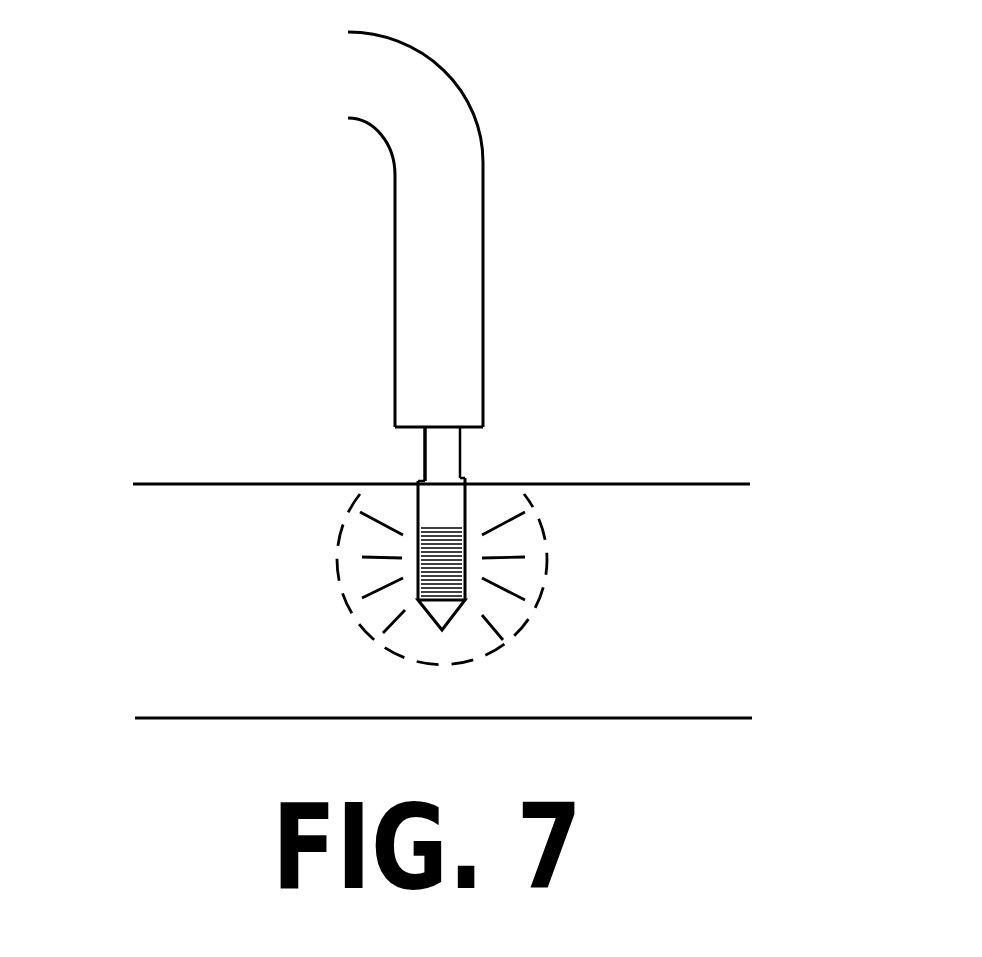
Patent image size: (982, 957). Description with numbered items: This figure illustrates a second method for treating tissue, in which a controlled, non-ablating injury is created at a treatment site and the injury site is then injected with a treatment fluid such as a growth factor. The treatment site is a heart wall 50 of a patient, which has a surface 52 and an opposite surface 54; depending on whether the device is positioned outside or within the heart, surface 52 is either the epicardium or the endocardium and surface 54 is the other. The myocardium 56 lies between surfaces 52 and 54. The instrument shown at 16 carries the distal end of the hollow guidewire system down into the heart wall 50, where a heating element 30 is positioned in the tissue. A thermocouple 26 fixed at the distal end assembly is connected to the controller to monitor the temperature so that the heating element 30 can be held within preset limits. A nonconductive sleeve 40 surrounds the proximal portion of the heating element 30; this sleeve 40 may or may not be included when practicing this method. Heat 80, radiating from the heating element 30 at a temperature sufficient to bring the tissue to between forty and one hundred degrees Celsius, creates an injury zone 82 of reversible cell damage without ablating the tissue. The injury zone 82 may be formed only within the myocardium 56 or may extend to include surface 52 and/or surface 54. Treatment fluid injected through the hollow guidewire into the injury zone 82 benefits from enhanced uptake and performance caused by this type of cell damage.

The driver handpiece 16 is at (445, 288).
The thermocouple 26 is at (418, 548).
The heating element 30 is at (448, 578).
The nonconductive sleeve 40 is at (447, 498).
The heart wall 50 is at (225, 460).
The surface of heart wall 52 is at (682, 482).
The surface of heart wall 54 is at (700, 718).
The myocardium 56 is at (225, 628).
The heat 80 is at (515, 558).
The injury zone 82 is at (347, 628).